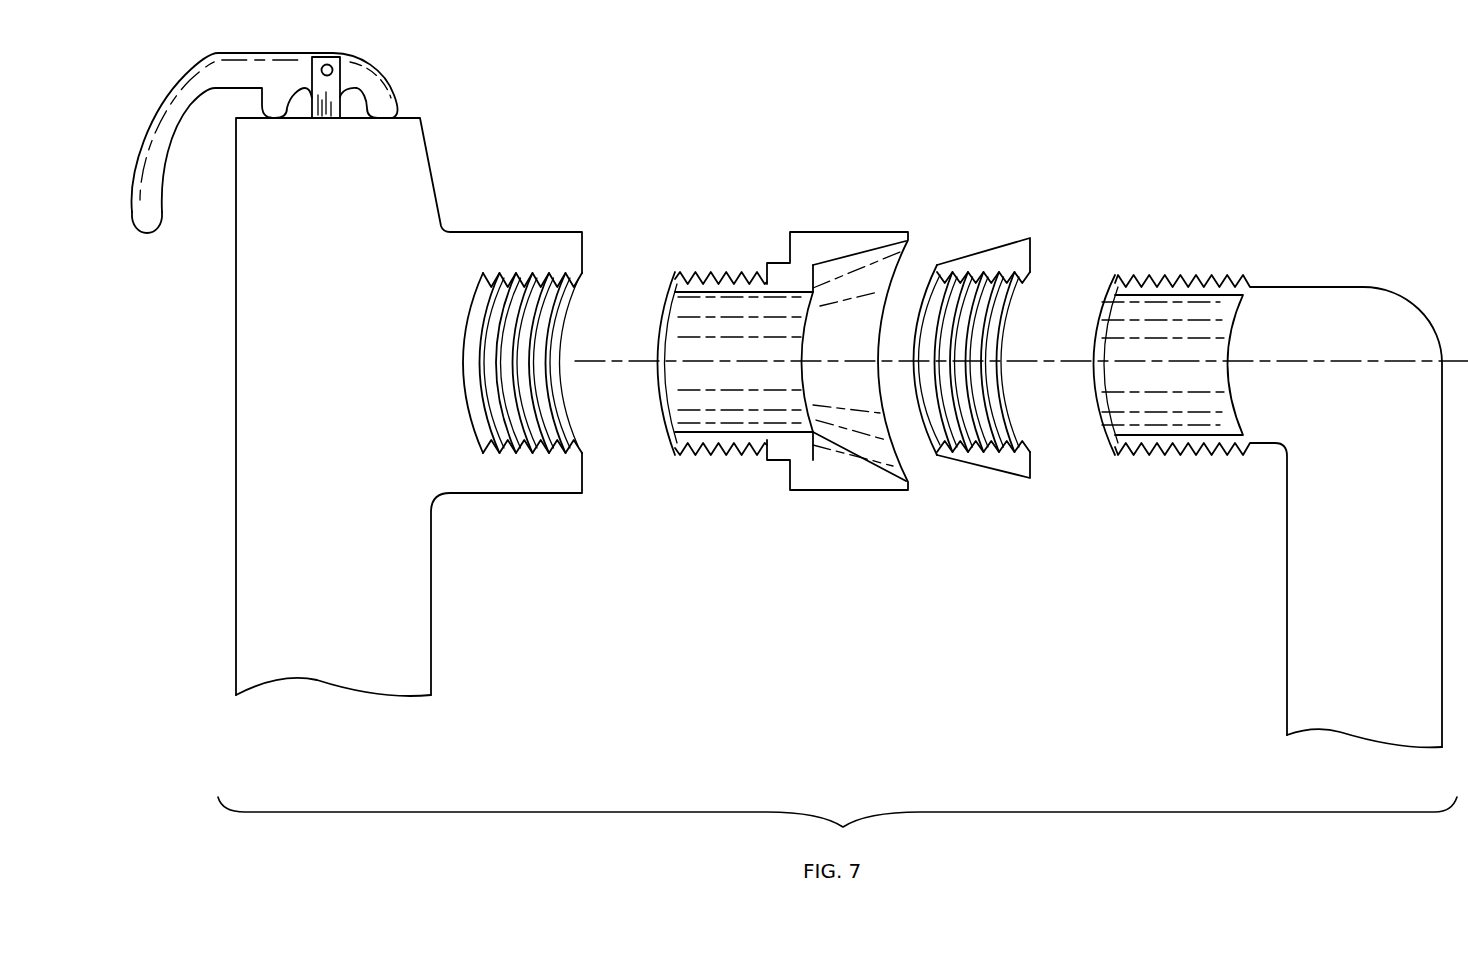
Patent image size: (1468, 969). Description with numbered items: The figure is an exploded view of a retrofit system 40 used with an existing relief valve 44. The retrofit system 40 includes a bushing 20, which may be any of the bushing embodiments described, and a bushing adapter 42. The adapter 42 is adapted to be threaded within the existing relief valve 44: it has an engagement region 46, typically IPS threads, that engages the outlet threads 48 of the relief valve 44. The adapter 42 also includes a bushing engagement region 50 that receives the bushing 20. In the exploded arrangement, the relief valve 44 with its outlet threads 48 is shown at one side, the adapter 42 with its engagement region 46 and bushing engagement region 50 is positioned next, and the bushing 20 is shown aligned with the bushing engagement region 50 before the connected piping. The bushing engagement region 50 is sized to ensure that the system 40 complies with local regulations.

The relief valve 44 is at (473, 232).
The outlet threads 48 is at (477, 303).
The engagement region 46 is at (693, 444).
The bushing engagement region 50 is at (848, 232).
The bushing adapter 42 is at (787, 373).
The bushing 20 is at (995, 467).
The retrofit system 40 is at (1212, 213).